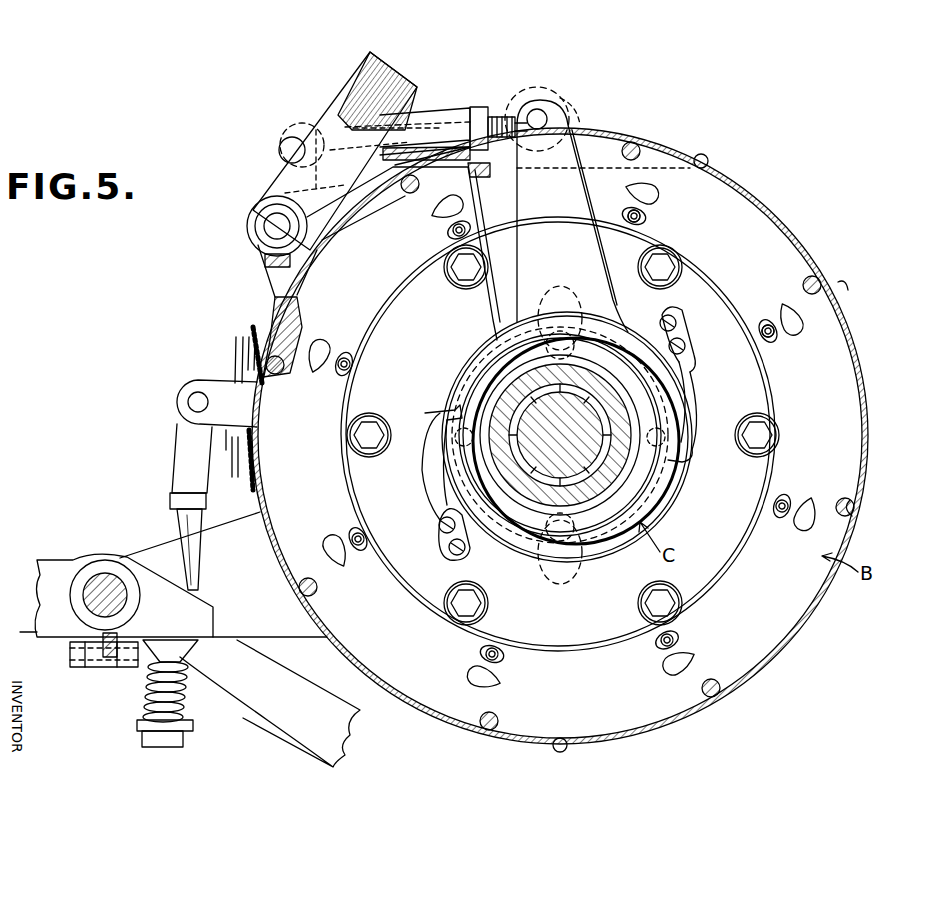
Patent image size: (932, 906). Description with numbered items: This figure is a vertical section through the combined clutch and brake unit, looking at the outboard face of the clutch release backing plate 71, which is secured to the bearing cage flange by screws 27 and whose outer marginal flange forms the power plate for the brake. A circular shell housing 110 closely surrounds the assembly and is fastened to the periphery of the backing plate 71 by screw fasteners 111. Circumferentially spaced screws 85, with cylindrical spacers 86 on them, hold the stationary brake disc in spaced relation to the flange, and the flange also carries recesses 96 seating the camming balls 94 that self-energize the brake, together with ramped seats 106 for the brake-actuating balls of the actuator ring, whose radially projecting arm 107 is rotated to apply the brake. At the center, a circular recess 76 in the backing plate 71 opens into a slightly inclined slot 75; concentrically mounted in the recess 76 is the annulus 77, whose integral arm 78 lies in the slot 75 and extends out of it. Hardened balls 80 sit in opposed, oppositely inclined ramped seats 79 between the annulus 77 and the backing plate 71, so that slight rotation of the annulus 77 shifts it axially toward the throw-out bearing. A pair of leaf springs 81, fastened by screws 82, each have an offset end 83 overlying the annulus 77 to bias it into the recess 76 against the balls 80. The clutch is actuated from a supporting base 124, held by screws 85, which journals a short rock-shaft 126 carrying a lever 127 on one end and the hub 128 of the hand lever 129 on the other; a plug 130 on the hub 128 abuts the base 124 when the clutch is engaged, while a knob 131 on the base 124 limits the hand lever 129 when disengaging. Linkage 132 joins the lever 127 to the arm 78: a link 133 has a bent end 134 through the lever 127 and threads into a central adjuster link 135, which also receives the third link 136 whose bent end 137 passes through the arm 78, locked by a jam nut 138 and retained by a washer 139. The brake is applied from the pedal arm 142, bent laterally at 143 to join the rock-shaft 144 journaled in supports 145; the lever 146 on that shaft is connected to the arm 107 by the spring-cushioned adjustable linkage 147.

The screws 27 is at (778, 436).
The clutch release backing plate 71 is at (558, 434).
The slot 75 is at (503, 213).
The circular recess 76 is at (490, 354).
The annulus 77 is at (504, 530).
The arm 78 is at (603, 216).
The ramped seats 79 is at (560, 437).
The hardened balls 80 is at (560, 437).
The leaf springs 81 is at (428, 482).
The screws 82 is at (448, 547).
The offset end 83 is at (440, 407).
The screws 85 is at (408, 194).
The cylindrical spacers 86 is at (846, 294).
The camming balls 94 is at (643, 212).
The recesses 96 is at (648, 222).
The ramped seats 106 is at (648, 188).
The arm 107 is at (197, 380).
The housing 110 is at (752, 192).
The screw fasteners 111 is at (703, 154).
The supporting base 124 is at (304, 308).
The rock-shaft 126 is at (264, 226).
The lever 127 is at (262, 150).
The hub 128 is at (256, 205).
The hand lever 129 is at (395, 62).
The plug 130 is at (263, 261).
The knob 131 is at (370, 212).
The linkage 132 is at (474, 104).
The link 133 is at (320, 130).
The bent end 134 is at (285, 143).
The central adjuster link 135 is at (425, 106).
The third link 136 is at (520, 110).
The bent end 137 is at (550, 119).
The jam nut 138 is at (490, 112).
The washer 139 is at (566, 102).
The arm 142 is at (262, 732).
The laterally bent portion 143 is at (48, 636).
The rock-shaft 144 is at (104, 573).
The supports 145 is at (212, 549).
The lever 146 is at (207, 604).
The adjustable linkage 147 is at (170, 464).